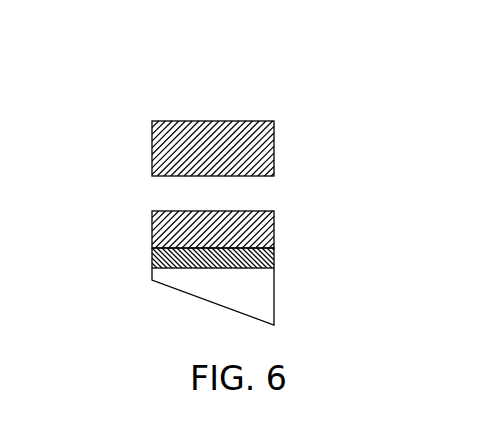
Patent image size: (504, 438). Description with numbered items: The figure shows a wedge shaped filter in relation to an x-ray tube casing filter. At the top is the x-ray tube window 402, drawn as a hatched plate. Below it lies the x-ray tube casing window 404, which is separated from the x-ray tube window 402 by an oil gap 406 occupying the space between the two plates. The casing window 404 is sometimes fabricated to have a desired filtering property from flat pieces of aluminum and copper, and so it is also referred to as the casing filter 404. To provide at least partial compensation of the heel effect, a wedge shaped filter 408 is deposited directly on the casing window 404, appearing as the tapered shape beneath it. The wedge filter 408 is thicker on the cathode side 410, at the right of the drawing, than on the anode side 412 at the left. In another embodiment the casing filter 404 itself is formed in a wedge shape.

The x-ray tube window 402 is at (152, 148).
The x-ray tube casing window 404 is at (282, 233).
The oil gap 406 is at (259, 192).
The wedge shaped filter 408 is at (190, 296).
The cathode side 410 is at (302, 64).
The anode side 412 is at (122, 64).